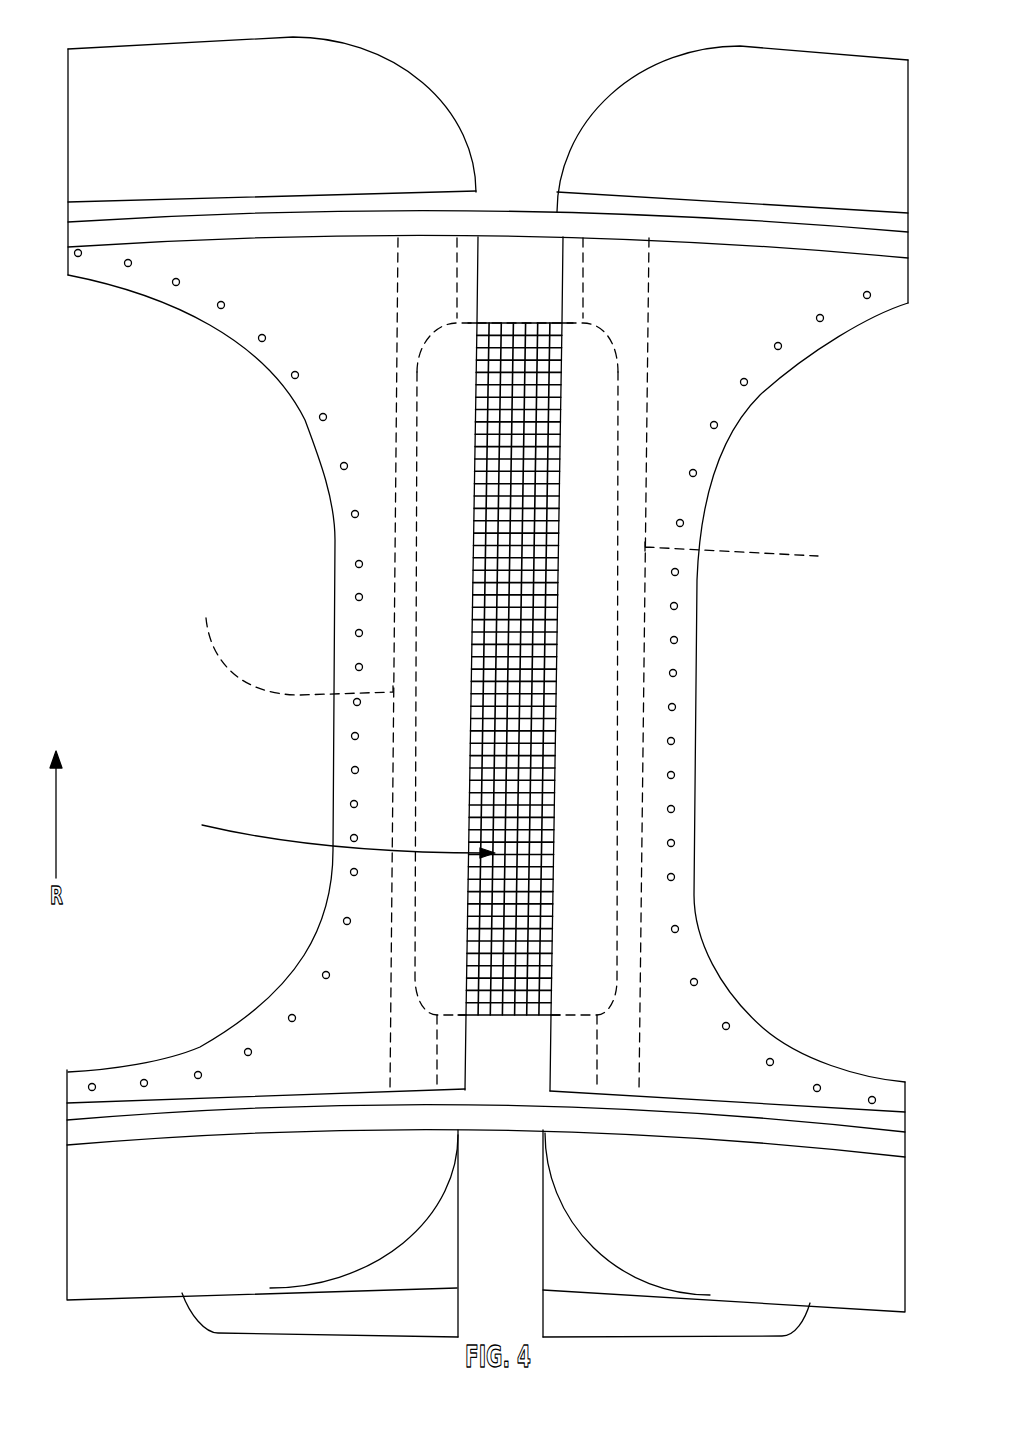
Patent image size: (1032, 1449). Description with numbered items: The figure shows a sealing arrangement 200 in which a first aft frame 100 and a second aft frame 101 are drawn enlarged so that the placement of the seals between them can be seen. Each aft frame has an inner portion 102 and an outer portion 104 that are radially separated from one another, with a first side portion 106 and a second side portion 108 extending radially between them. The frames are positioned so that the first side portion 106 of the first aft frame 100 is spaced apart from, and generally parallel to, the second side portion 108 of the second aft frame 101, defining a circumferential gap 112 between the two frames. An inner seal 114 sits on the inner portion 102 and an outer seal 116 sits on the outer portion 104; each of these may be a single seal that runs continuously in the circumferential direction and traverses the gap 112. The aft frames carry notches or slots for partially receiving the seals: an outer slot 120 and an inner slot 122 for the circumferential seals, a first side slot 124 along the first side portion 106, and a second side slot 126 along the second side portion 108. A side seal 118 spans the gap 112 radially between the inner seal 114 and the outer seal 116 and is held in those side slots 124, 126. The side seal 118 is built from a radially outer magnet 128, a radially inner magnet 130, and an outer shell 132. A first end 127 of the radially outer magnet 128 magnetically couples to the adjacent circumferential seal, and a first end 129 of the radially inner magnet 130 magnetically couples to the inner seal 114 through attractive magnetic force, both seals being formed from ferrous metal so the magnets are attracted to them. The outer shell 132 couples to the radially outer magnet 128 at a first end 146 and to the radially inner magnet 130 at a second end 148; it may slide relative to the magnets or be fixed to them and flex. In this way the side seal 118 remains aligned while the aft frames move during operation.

The first aft frame 100 is at (107, 95).
The second aft frame 101 is at (687, 83).
The inner portion 102 is at (90, 147).
The outer portion 104 is at (85, 1172).
The first side portion 106 is at (333, 554).
The second side portion 108 is at (708, 510).
The circumferential gap 112 is at (331, 834).
The inner seal 114 is at (512, 222).
The outer seal 116 is at (500, 1135).
The side seal 118 is at (512, 663).
The outer slot 120 is at (272, 197).
The inner slot 122 is at (201, 1138).
The first side slot 124 is at (290, 643).
The second side slot 126 is at (620, 664).
The first end of the radially outer magnet 127 is at (546, 238).
The radially outer magnet 128 is at (552, 298).
The first end of the radially inner magnet 129 is at (447, 1105).
The radially inner magnet 130 is at (527, 1062).
The outer shell 132 is at (527, 787).
The first end of the outer shell 146 is at (517, 338).
The second end of the outer shell 148 is at (498, 1022).
The sealing arrangement 200 is at (221, 20).